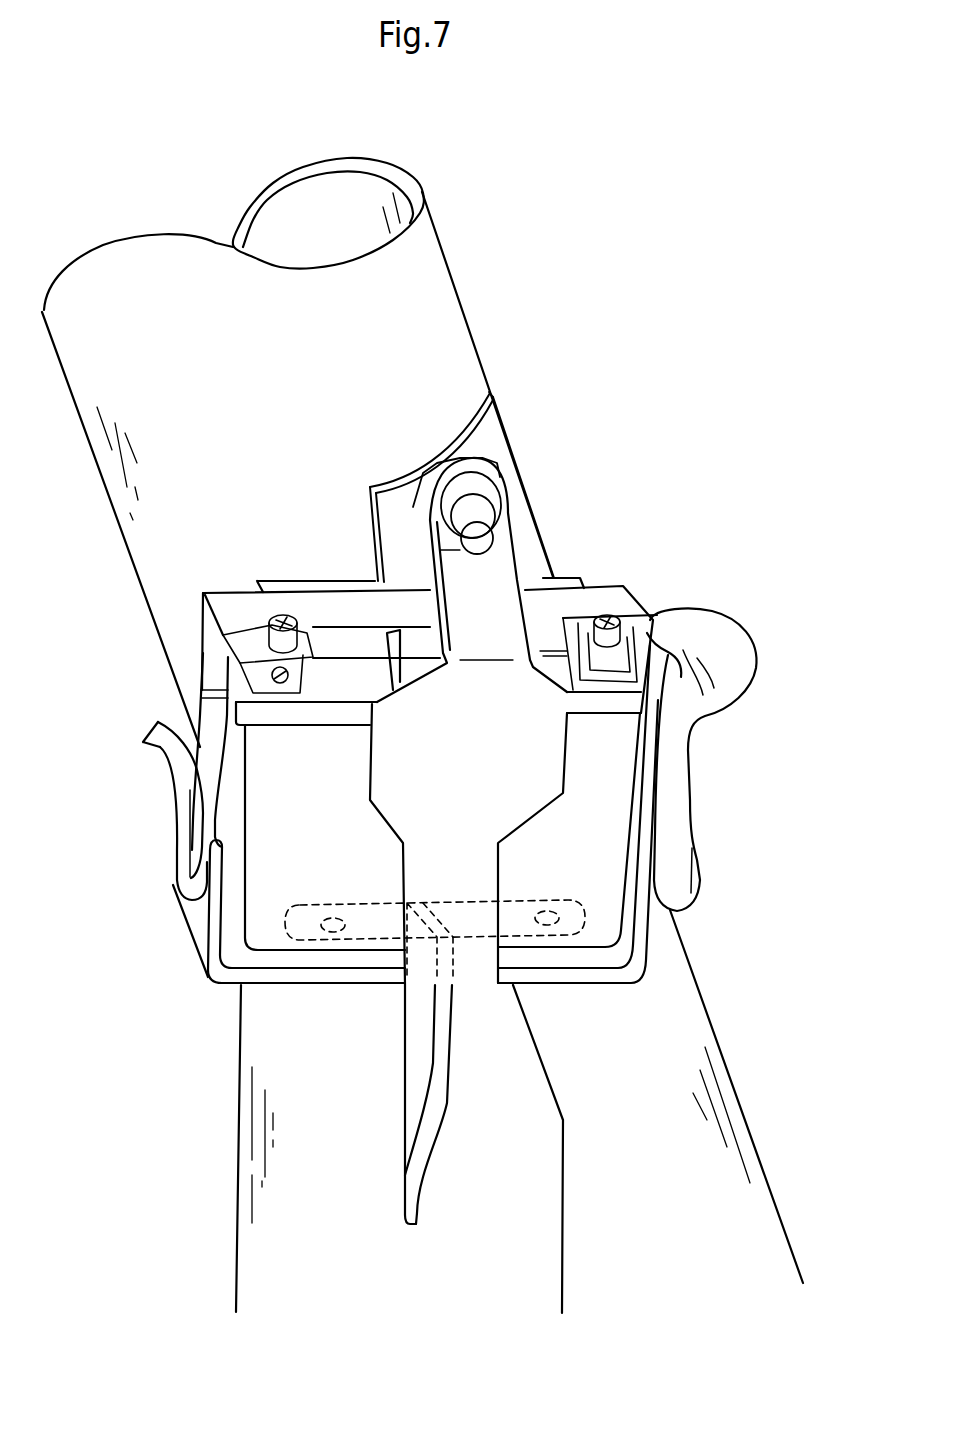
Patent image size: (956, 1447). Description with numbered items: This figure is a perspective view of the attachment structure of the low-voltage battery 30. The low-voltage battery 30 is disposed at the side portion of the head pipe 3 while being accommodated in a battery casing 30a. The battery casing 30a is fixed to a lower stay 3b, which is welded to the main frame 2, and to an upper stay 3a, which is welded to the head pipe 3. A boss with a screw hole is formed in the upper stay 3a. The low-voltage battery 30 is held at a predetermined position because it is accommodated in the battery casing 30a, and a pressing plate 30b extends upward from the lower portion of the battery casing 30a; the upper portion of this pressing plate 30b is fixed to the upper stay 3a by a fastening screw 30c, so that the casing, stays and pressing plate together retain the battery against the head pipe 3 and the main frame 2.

The main frame 2 is at (238, 1138).
The head pipe 3 is at (463, 313).
The upper stay 3a is at (490, 468).
The lower stay 3b is at (298, 938).
The low-voltage battery 30 is at (648, 588).
The battery casing 30a is at (640, 965).
The pressing plate 30b is at (494, 588).
The fastening screw 30c is at (498, 547).